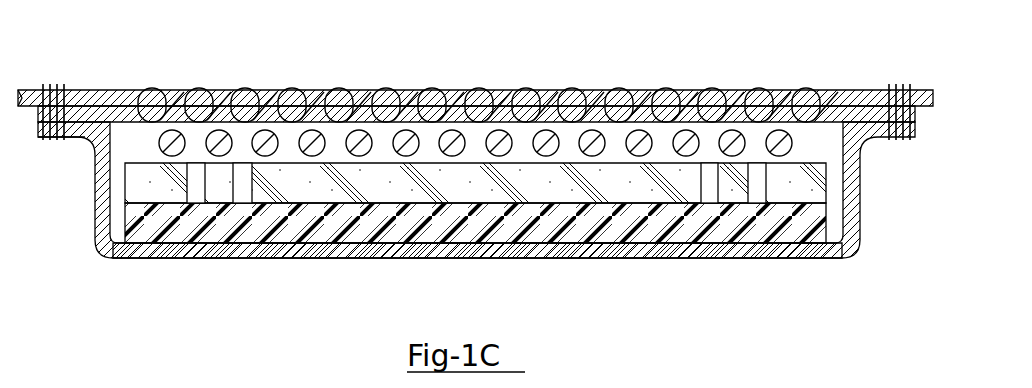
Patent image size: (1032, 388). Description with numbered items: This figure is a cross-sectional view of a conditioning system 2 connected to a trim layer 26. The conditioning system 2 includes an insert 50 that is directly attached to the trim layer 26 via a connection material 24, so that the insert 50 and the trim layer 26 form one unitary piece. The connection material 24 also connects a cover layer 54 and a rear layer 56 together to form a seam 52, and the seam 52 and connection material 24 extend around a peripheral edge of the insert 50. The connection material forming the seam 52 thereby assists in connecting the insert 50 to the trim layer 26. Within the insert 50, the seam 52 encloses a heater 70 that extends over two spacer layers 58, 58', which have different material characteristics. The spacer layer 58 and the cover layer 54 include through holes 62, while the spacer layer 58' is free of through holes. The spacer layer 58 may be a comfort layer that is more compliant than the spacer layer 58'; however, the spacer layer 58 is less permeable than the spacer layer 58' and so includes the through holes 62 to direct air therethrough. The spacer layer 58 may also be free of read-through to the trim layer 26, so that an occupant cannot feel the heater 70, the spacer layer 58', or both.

The conditioning system 2 is at (716, 40).
The connection material 24 is at (377, 88).
The trim layer 26 is at (220, 88).
The insert 50 is at (128, 278).
The seam 52 is at (66, 112).
The cover layer 54 is at (778, 115).
The rear layer 56 is at (612, 250).
The spacer layer 58 is at (521, 188).
The spacer layer 58' is at (431, 229).
The through holes 62 is at (243, 115).
The heater 70 is at (547, 130).